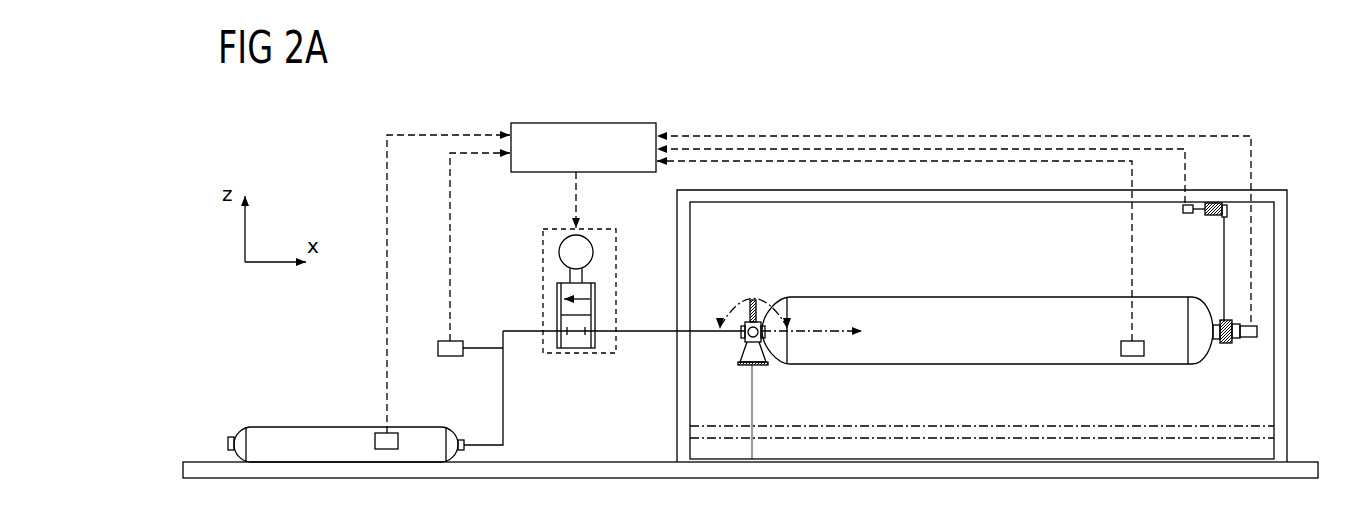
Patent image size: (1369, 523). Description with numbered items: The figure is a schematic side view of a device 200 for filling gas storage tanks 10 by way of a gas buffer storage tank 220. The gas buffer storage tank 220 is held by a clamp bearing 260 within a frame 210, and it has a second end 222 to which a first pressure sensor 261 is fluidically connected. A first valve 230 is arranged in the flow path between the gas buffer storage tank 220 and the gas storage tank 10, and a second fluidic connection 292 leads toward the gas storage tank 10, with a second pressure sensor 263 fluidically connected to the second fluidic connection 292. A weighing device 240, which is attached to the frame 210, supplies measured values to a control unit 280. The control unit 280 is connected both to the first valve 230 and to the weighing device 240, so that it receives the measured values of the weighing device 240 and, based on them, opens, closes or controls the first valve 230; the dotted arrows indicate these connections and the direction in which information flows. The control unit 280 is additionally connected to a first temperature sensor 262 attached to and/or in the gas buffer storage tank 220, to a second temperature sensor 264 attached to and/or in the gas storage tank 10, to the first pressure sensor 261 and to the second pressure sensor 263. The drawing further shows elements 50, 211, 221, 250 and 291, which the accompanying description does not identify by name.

The device for filling gas storage tanks 200 is at (840, 103).
The gas storage tank 10 is at (332, 440).
The base plate 50 is at (192, 462).
The frame 210 is at (817, 197).
The guide rails 211 is at (898, 430).
The gas buffer storage tank 220 is at (937, 318).
The rotation direction 221 is at (750, 283).
The second end 222 is at (1212, 363).
The first valve 230 is at (543, 240).
The weighing device 240 is at (1208, 222).
The signal line 250 is at (1224, 270).
The clamp bearing 260 is at (738, 350).
The first pressure sensor 261 is at (1247, 342).
The first temperature sensor 262 is at (1123, 346).
The second pressure sensor 263 is at (455, 341).
The second temperature sensor 264 is at (388, 432).
The control unit 280 is at (603, 161).
The supply line 291 is at (640, 333).
The second fluidic connection 292 is at (503, 418).